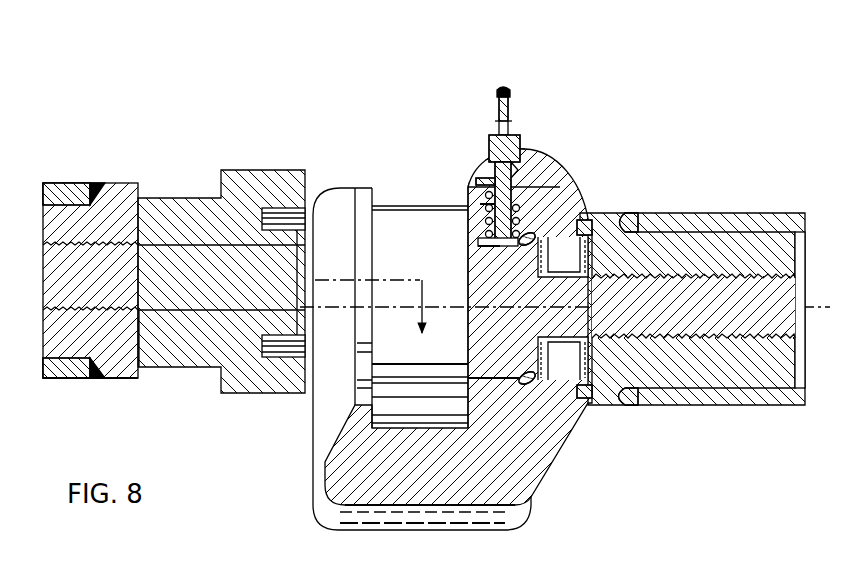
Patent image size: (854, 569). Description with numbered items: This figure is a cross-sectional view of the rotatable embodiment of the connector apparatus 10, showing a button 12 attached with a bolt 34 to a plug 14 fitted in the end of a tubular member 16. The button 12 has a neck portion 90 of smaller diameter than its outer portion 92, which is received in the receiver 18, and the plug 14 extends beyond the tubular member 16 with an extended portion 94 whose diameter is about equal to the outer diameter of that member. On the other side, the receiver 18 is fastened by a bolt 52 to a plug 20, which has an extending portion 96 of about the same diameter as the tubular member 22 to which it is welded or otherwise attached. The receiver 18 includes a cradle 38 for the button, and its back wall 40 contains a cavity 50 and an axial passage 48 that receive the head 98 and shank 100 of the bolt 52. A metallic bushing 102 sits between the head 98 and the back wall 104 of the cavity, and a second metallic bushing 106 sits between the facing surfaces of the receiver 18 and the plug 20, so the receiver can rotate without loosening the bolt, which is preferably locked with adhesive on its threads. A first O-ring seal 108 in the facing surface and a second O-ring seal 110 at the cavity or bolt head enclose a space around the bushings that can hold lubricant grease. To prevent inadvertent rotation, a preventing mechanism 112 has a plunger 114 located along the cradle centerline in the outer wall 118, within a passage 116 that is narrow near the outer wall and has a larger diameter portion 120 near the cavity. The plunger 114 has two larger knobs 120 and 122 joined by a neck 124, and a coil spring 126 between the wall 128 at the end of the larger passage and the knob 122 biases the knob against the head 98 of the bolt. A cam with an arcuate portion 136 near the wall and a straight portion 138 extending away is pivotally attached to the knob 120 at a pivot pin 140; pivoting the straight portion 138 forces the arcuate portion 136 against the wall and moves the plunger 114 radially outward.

The connector apparatus 10 is at (296, 520).
The button 12 is at (263, 125).
The plug 14 is at (143, 157).
The tubular member 16 is at (97, 149).
The receiver 18 is at (615, 480).
The plug 20 is at (643, 432).
The tubular member 22 is at (781, 432).
The bolt 34 is at (190, 312).
The cradle 38 is at (404, 222).
The back wall 40 is at (462, 388).
The axial passage 48 is at (636, 307).
The cavity 50 is at (468, 372).
The bolt 52 is at (712, 342).
The neck portion 90 is at (176, 199).
The outer portion 92 is at (285, 180).
The extended portion 94 is at (115, 379).
The extending portion 96 is at (600, 250).
The head 98 is at (505, 378).
The shank 100 is at (734, 332).
The metallic bushing 102 is at (538, 357).
The back wall 104 is at (578, 336).
The metallic bushing 106 is at (630, 222).
The first O-ring seal 108 is at (590, 222).
The second O-ring seal 110 is at (588, 218).
The preventing mechanism 112 is at (497, 100).
The plunger 114 is at (513, 102).
The passage 116 is at (513, 172).
The outer wall 118 is at (488, 240).
The knob 120 is at (489, 148).
The knob 122 is at (480, 248).
The neck 124 is at (478, 173).
The coil spring 126 is at (493, 206).
The wall 128 is at (558, 138).
The arcuate portion 136 is at (488, 192).
The straight portion 138 is at (500, 98).
The pivot pin 140 is at (501, 137).